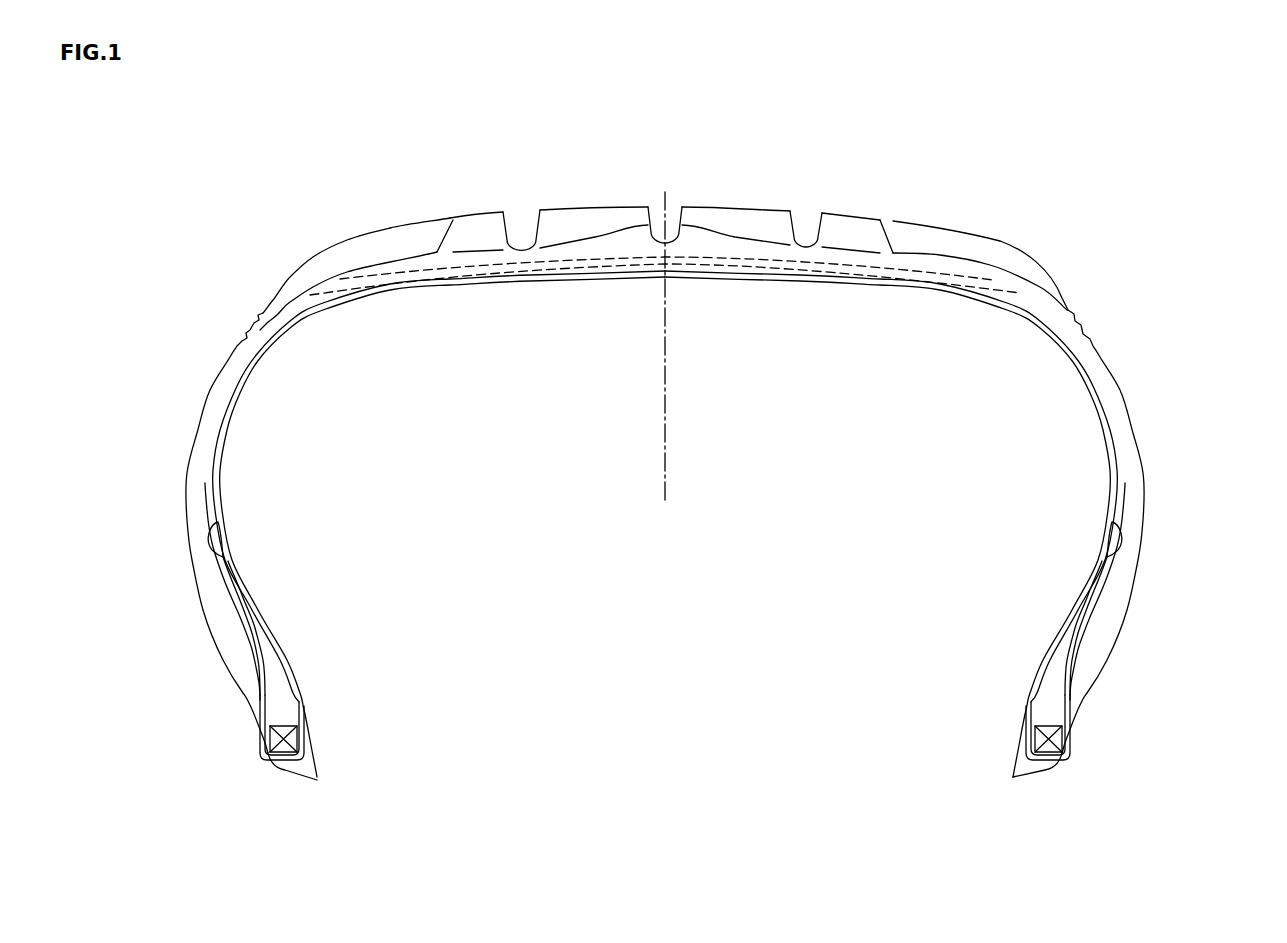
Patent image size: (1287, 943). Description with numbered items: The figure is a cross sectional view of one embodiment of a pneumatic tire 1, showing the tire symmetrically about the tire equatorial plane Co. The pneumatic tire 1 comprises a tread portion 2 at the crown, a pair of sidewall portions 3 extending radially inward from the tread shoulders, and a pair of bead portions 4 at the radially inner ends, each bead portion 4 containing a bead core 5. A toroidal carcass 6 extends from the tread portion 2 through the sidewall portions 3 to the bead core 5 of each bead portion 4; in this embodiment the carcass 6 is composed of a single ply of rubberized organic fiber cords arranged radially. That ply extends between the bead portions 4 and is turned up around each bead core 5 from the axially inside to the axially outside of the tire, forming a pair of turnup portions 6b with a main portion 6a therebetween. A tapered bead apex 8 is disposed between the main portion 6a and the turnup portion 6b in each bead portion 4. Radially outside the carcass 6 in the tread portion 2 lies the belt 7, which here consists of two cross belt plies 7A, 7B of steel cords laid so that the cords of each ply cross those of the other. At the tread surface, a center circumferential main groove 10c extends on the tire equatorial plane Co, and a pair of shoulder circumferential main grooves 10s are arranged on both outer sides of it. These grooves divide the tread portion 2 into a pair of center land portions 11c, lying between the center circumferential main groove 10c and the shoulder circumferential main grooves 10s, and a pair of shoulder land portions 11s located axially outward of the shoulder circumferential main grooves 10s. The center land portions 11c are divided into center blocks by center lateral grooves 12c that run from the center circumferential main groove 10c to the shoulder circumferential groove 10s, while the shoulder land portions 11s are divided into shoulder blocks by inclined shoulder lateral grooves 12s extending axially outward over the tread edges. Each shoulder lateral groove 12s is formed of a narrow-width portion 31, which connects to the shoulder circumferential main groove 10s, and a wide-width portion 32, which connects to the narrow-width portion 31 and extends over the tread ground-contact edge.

The pneumatic tire 1 is at (1096, 196).
The tread portion 2 is at (968, 207).
The sidewall portion 3 is at (1160, 490).
The bead portion 4 is at (990, 722).
The bead core 5 is at (1050, 746).
The carcass 6 is at (665, 486).
The main portion 6a is at (1068, 612).
The turnup portion 6b is at (1110, 523).
The belt 7 is at (665, 353).
The belt ply 7A is at (843, 274).
The belt ply 7B is at (780, 268).
The bead apex 8 is at (1053, 682).
The center circumferential main groove 10c is at (677, 203).
The shoulder circumferential main groove 10s is at (523, 205).
The center land portion 11c is at (588, 206).
The shoulder land portion 11s is at (393, 226).
The center lateral groove 12c is at (733, 233).
The shoulder lateral groove 12s is at (911, 170).
The narrow-width portion 31 is at (850, 247).
The wide-width portion 32 is at (920, 253).
The tire equatorial plane Co is at (662, 333).